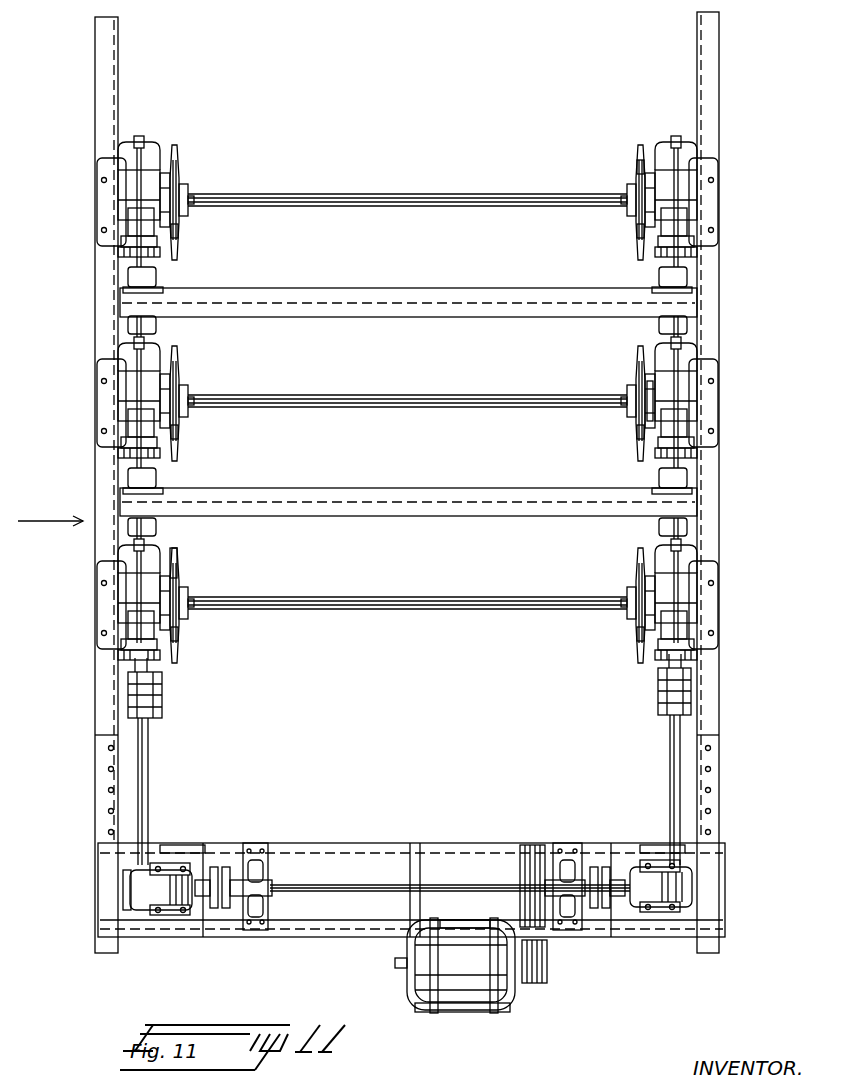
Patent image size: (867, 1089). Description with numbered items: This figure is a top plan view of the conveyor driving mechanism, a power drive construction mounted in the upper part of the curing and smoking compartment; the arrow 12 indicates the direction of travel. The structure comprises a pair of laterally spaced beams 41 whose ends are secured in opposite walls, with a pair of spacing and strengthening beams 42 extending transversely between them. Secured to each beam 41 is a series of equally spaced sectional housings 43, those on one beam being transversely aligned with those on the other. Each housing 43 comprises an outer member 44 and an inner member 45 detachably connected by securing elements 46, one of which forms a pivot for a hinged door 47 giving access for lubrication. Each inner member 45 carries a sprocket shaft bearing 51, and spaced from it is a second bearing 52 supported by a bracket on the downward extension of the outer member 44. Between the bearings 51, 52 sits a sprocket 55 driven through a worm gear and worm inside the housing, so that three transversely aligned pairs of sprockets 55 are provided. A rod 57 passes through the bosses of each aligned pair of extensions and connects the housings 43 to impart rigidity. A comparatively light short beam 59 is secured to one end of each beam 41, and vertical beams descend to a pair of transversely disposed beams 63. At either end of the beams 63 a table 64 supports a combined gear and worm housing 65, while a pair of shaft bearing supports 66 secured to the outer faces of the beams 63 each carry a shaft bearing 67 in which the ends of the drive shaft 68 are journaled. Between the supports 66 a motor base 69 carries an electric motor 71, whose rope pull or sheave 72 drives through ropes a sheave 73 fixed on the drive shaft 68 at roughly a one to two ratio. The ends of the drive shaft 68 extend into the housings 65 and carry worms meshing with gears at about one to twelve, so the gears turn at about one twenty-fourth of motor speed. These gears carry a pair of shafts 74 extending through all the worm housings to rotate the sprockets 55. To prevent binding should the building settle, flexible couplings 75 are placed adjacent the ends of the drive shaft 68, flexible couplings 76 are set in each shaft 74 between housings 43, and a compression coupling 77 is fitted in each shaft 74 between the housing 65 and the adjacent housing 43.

The direction of travel arrow 12 is at (50, 507).
The beam 41 is at (104, 92).
The spacing and strengthening beam 42 is at (453, 300).
The sectional housing 43 is at (130, 187).
The outer member 44 is at (130, 168).
The inner member 45 is at (150, 158).
The securing element 46 is at (172, 548).
The hinged door 47 is at (158, 226).
The sprocket shaft bearing 51 is at (165, 188).
The second bearing 52 is at (186, 204).
The sprocket 55 is at (178, 250).
The rod 57 is at (346, 208).
The short beam 59 is at (108, 836).
The transversely disposed beam 63 is at (293, 886).
The table 64 is at (185, 848).
The combined gear and worm housing 65 is at (172, 908).
The shaft bearing support 66 is at (256, 848).
The shaft bearing 67 is at (268, 898).
The drive shaft 68 is at (362, 882).
The motor base 69 is at (420, 940).
The electric motor 71 is at (470, 958).
The rope pull or sheave 72 is at (547, 975).
The sheave 73 is at (532, 848).
The shaft 74 is at (149, 772).
The flexible coupling 75 is at (222, 910).
The flexible coupling 76 is at (152, 282).
The compression coupling 77 is at (163, 698).